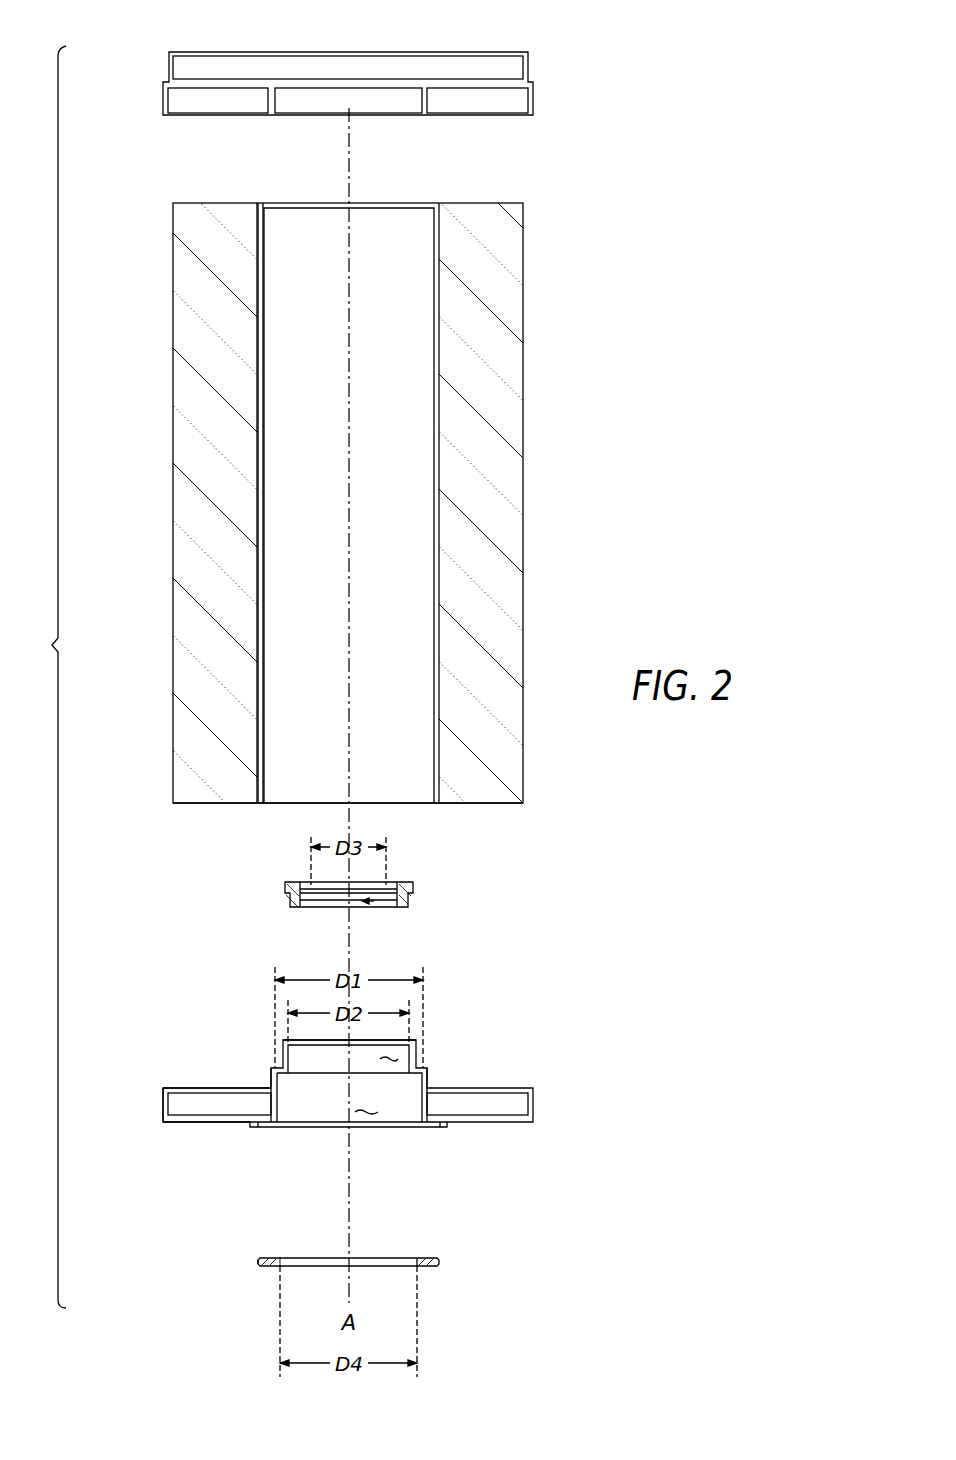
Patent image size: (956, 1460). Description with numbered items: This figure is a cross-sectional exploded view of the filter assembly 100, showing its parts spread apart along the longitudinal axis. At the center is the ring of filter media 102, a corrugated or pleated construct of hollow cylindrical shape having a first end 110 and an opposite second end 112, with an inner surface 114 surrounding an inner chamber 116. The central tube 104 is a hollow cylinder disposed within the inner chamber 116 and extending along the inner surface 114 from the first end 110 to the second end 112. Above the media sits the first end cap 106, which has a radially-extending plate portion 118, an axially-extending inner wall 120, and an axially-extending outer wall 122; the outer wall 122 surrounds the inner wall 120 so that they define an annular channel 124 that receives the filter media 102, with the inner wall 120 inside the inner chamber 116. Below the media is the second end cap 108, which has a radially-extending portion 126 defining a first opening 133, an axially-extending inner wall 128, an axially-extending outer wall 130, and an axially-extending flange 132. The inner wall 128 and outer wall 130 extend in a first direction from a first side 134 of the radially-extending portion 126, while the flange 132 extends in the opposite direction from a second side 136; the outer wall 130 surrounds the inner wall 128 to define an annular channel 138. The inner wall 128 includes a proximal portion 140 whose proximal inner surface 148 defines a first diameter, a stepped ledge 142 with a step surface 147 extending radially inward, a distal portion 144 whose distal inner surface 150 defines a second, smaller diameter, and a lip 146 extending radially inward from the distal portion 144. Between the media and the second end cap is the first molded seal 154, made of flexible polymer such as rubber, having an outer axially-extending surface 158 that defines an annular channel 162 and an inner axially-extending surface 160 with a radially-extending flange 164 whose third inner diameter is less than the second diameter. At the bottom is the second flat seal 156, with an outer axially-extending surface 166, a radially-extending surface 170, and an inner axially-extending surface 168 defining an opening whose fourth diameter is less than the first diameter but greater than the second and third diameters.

The filter assembly 100 is at (37, 677).
The ring of filter media 102 is at (213, 400).
The central tube 104 is at (443, 425).
The first end cap 106 is at (530, 70).
The second end cap 108 is at (535, 1100).
The first end 110 is at (195, 203).
The second end 112 is at (188, 805).
The inner surface 114 is at (258, 606).
The inner chamber 116 is at (302, 560).
The plate portion 118 is at (385, 80).
The inner wall 120 is at (268, 96).
The outer wall 122 is at (163, 98).
The annular channel 124 is at (478, 99).
The radially-extending portion 126 is at (517, 1123).
The inner wall 128 is at (268, 1097).
The outer wall 130 is at (163, 1097).
The axially-extending flange 132 is at (252, 1127).
The first opening 133 is at (280, 1128).
The first side 134 is at (188, 1112).
The second side 136 is at (180, 1123).
The annular channel 138 is at (217, 1100).
The proximal portion 140 is at (432, 1097).
The stepped ledge 142 is at (417, 1068).
The distal portion 144 is at (418, 1038).
The lip 146 is at (310, 1045).
The step surface 147 is at (285, 1090).
The proximal inner surface 148 is at (376, 1101).
The distal inner surface 150 is at (386, 1062).
The first molded seal 154 is at (413, 888).
The second flat seal 156 is at (440, 1262).
The outer axially-extending surface 158 is at (287, 888).
The inner axially-extending surface 160 is at (370, 905).
The annular channel 162 is at (287, 897).
The radially-extending flange 164 is at (326, 898).
The outer axially-extending surface 166 is at (258, 1262).
The inner axially-extending surface 168 is at (378, 1258).
The radially-extending surface 170 is at (270, 1258).